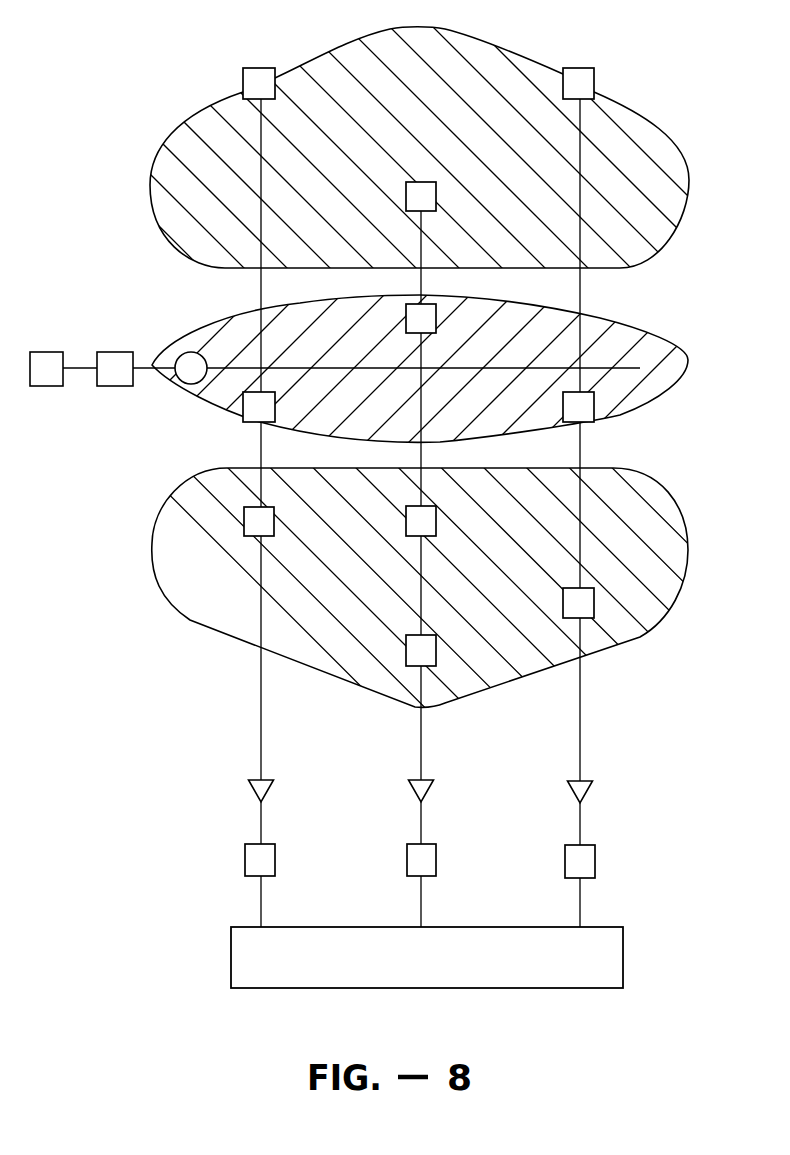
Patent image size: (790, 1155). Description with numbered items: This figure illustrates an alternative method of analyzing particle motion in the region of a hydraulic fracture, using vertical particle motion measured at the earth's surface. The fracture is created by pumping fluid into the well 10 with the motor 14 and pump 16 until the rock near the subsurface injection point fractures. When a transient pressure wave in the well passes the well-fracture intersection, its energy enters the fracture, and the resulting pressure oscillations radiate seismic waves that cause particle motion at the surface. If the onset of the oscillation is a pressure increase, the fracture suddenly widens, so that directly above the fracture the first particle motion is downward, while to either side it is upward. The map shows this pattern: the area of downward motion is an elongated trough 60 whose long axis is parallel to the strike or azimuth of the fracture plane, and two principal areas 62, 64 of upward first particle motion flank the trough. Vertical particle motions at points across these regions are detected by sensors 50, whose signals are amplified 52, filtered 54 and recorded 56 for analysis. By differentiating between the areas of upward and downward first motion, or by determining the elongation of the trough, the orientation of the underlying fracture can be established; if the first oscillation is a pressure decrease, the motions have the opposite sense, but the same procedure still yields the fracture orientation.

The well 10 is at (188, 352).
The motor 14 is at (57, 386).
The pump 16 is at (120, 386).
The sensors 50 is at (412, 661).
The amplifier 52 is at (250, 787).
The filter 54 is at (252, 860).
The recorder 56 is at (617, 945).
The elongated trough 60 is at (228, 383).
The area of upward first particle motion 62 is at (140, 245).
The area of upward first particle motion 64 is at (178, 630).